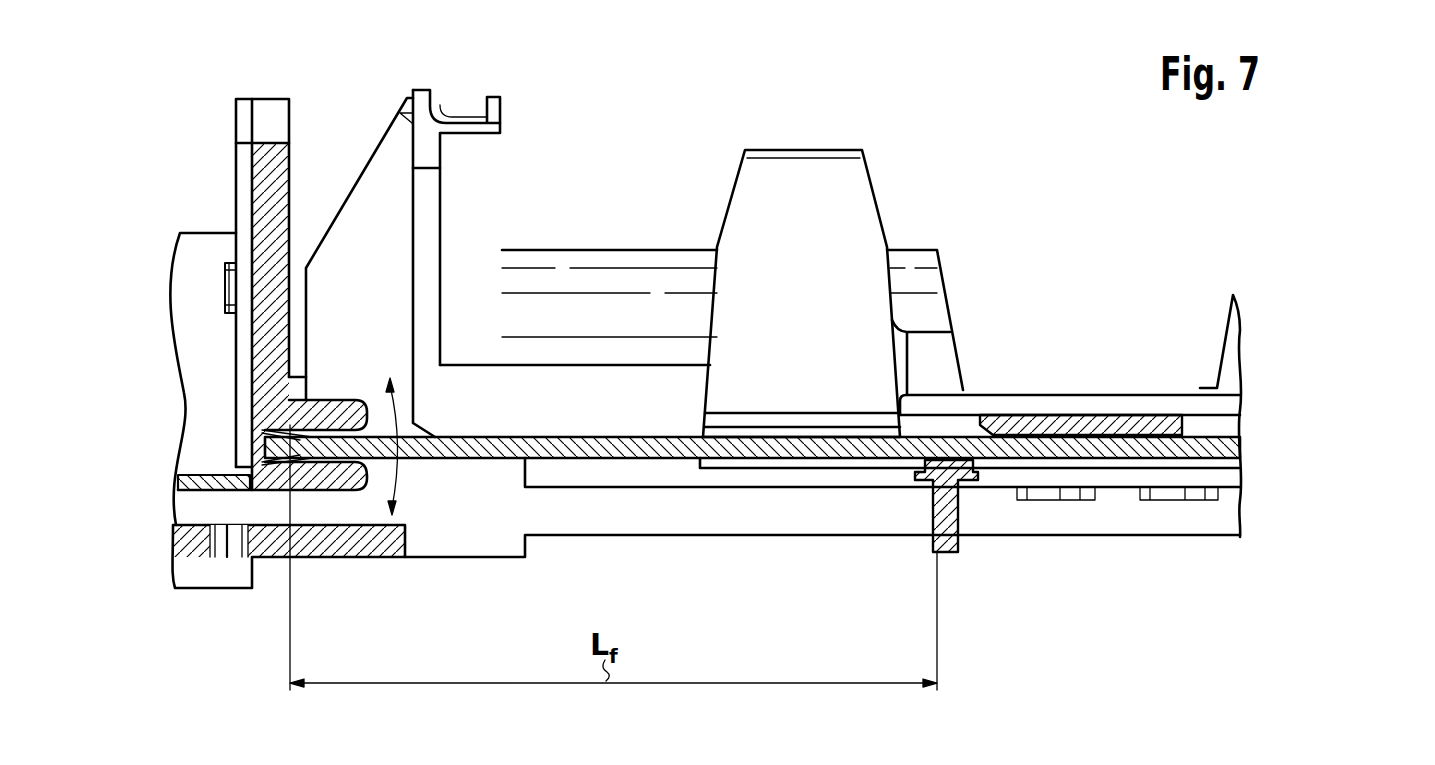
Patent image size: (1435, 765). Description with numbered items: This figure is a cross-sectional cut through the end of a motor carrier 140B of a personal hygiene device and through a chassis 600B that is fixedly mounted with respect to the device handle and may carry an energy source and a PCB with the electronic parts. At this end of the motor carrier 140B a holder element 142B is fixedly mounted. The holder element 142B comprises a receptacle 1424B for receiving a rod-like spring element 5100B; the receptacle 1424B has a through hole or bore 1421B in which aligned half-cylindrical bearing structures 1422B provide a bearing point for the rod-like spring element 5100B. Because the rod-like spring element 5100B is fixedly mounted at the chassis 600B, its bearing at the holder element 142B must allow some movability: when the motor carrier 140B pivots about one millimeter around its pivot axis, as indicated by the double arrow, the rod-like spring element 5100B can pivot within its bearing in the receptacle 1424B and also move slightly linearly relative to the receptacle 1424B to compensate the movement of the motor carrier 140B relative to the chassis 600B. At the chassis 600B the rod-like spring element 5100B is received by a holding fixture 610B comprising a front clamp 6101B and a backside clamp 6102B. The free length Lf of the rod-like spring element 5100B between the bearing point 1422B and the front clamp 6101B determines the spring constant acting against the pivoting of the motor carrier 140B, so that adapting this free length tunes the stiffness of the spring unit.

The motor carrier 140B is at (197, 337).
The holder element 142B is at (265, 205).
The through hole or bore 1421B is at (236, 441).
The half-cylindrical bearing structures 1422B is at (272, 476).
The receptacle 1424B is at (322, 485).
The rod-like spring element 5100B is at (663, 448).
The chassis 600B is at (800, 168).
The holding fixture 610B is at (1288, 330).
The front clamp 6101B is at (948, 497).
The backside clamp 6102B is at (1078, 428).